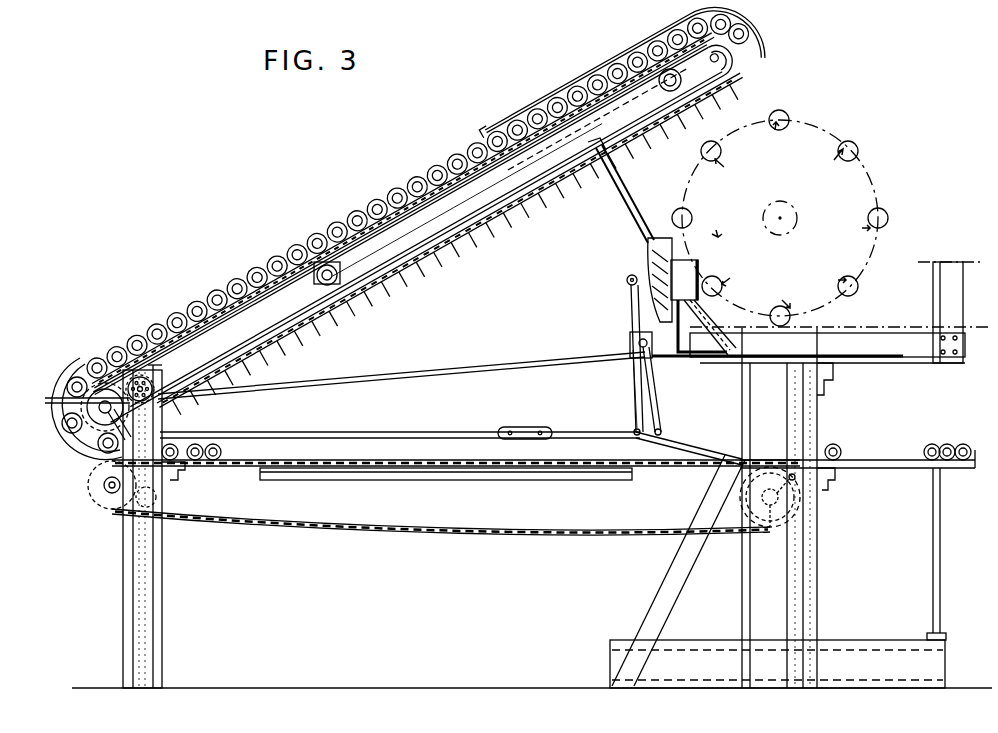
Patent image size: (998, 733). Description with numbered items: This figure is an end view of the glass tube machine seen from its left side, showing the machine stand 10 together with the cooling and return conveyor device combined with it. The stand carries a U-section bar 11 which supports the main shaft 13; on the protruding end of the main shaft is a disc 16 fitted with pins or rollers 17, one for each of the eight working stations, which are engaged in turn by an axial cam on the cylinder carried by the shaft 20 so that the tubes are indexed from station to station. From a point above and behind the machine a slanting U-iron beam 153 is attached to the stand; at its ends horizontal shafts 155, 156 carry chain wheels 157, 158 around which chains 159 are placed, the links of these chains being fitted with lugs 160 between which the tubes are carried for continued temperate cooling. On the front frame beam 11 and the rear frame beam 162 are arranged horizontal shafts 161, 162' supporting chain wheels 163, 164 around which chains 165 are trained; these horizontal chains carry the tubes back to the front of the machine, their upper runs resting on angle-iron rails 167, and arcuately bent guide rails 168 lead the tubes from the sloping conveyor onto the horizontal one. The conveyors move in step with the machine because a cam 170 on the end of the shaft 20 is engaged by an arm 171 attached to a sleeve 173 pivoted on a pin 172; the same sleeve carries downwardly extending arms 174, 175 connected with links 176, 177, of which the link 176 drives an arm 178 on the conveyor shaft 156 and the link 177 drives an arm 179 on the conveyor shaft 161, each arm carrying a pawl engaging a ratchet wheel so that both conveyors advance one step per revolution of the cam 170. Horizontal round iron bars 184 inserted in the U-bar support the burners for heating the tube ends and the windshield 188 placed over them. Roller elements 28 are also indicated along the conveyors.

The machine stand 10 is at (871, 626).
The U-section bar 11 is at (800, 598).
The main shaft 13 is at (790, 230).
The disc 16 is at (876, 194).
The pins or rollers 17 is at (885, 222).
The shaft 20 is at (628, 278).
The rollers 28 is at (640, 52).
The slanting U-iron beam 153 is at (430, 240).
The horizontal shaft 155 is at (733, 50).
The horizontal shaft 156 is at (106, 392).
The chain wheel 157 is at (718, 86).
The chain wheel 158 is at (138, 375).
The chains 159 is at (438, 179).
The lugs 160 is at (393, 202).
The horizontal shaft 161 is at (770, 530).
The frame beam 162 is at (167, 526).
The horizontal shaft 162' is at (104, 501).
The chain wheel 163 is at (728, 524).
The chain wheel 164 is at (152, 510).
The chains 165 is at (446, 531).
The rails 167 is at (462, 478).
The guide rails 168 is at (70, 375).
The cam 170 is at (648, 253).
The arm 171 is at (632, 306).
The pin 172 is at (632, 347).
The sleeve 173 is at (640, 341).
The arm 174 is at (655, 404).
The arm 175 is at (633, 400).
The link 176 is at (462, 420).
The link 177 is at (686, 450).
The arm 178 is at (104, 416).
The arm 179 is at (794, 500).
The horizontal round iron bars 184 is at (670, 92).
The windshield 188 is at (490, 124).